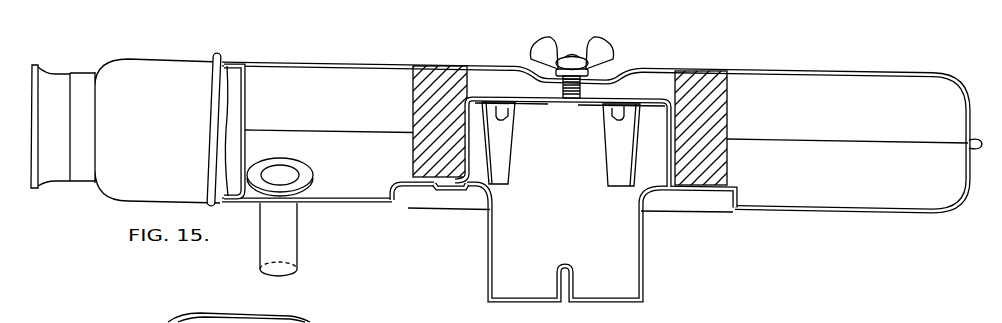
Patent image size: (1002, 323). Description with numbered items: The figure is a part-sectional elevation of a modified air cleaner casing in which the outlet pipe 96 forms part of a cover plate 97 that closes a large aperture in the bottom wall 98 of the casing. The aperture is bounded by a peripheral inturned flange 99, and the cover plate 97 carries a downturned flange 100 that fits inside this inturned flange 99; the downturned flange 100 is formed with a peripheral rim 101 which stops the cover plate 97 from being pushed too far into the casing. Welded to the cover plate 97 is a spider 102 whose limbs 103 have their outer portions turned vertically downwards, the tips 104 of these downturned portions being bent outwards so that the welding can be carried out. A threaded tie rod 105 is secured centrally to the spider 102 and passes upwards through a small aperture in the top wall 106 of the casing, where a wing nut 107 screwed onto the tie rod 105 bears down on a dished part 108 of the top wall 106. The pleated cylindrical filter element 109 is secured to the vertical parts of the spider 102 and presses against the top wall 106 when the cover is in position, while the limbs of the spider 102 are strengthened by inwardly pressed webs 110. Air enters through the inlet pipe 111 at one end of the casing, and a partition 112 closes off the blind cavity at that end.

The outlet pipe 96 is at (488, 232).
The cover plate 97 is at (410, 190).
The bottom wall 98 is at (334, 204).
The peripheral inturned flange 99 is at (398, 190).
The downturned flange 100 is at (677, 209).
The peripheral rim 101 is at (737, 213).
The spider 102 is at (518, 88).
The limbs 103 is at (614, 157).
The tips 104 is at (436, 179).
The threaded tie rod 105 is at (582, 92).
The top wall 106 is at (381, 62).
The wing nut 107 is at (540, 47).
The dished part 108 is at (636, 43).
The pleated cylindrical filter element 109 is at (413, 83).
The inwardly pressed webs 110 is at (505, 113).
The inlet pipe 111 is at (44, 72).
The partition 112 is at (246, 92).